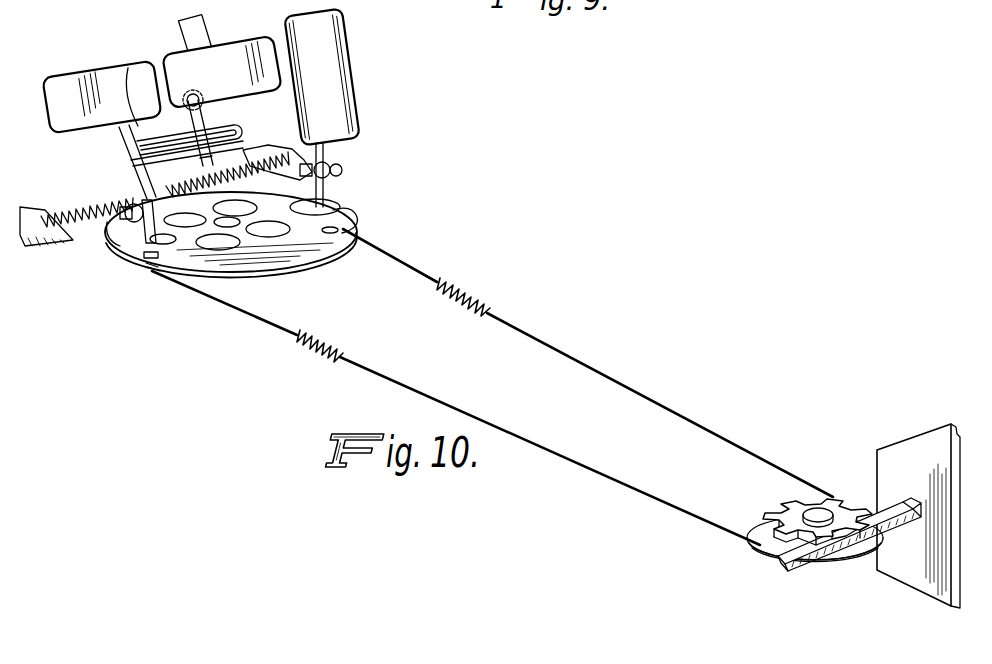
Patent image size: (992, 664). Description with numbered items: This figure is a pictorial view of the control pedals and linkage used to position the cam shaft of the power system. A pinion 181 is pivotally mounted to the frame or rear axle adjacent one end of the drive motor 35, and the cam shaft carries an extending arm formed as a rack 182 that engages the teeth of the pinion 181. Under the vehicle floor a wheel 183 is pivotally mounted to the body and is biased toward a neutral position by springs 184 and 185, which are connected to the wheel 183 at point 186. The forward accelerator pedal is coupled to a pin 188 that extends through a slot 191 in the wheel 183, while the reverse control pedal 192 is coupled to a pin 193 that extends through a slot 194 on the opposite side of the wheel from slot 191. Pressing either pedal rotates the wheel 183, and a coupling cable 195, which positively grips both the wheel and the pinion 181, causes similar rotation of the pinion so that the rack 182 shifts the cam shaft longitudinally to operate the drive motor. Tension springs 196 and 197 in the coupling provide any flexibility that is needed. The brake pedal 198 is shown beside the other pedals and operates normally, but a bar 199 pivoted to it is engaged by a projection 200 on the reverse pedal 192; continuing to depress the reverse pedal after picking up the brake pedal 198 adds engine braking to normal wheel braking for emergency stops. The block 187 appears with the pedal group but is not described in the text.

The drive motor 35 is at (923, 445).
The pinion 181 is at (834, 503).
The rack 182 is at (784, 572).
The wheel 183 is at (273, 253).
The spring 184 is at (60, 226).
The spring 185 is at (140, 190).
The point 186 is at (137, 193).
The weight block 187 is at (334, 93).
The pin 188 is at (324, 184).
The slot 191 is at (338, 224).
The reverse control pedal 192 is at (76, 86).
The pin 193 is at (114, 214).
The slot 194 is at (136, 250).
The coupling cable 195 is at (634, 398).
The tension spring 196 is at (471, 293).
The tension spring 197 is at (327, 337).
The brake pedal 198 is at (260, 54).
The bar 199 is at (241, 135).
The projection 200 is at (155, 134).